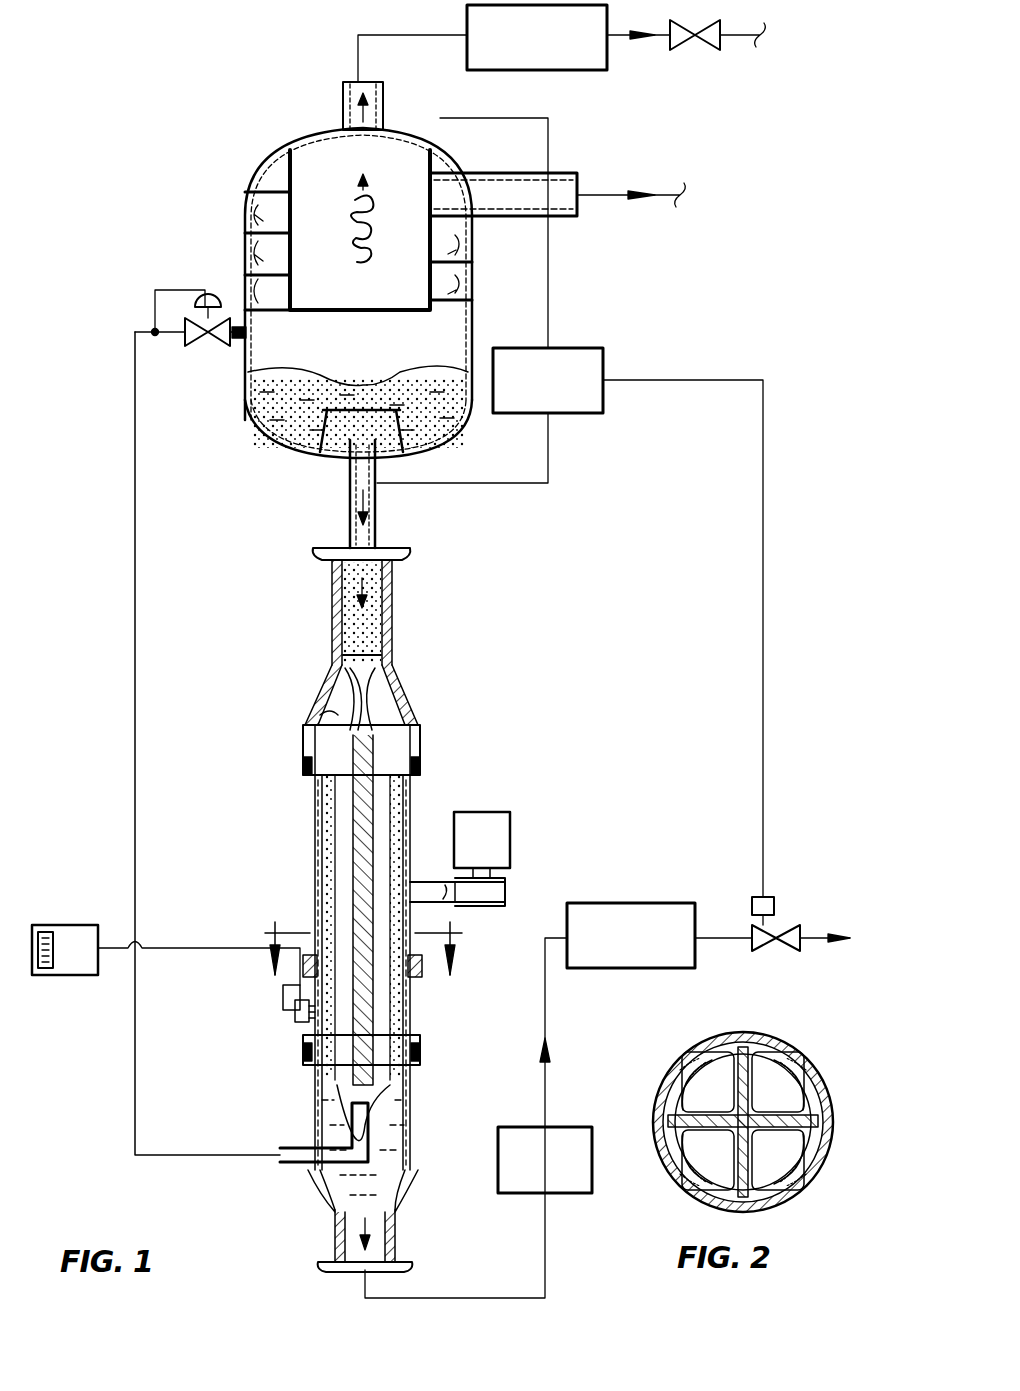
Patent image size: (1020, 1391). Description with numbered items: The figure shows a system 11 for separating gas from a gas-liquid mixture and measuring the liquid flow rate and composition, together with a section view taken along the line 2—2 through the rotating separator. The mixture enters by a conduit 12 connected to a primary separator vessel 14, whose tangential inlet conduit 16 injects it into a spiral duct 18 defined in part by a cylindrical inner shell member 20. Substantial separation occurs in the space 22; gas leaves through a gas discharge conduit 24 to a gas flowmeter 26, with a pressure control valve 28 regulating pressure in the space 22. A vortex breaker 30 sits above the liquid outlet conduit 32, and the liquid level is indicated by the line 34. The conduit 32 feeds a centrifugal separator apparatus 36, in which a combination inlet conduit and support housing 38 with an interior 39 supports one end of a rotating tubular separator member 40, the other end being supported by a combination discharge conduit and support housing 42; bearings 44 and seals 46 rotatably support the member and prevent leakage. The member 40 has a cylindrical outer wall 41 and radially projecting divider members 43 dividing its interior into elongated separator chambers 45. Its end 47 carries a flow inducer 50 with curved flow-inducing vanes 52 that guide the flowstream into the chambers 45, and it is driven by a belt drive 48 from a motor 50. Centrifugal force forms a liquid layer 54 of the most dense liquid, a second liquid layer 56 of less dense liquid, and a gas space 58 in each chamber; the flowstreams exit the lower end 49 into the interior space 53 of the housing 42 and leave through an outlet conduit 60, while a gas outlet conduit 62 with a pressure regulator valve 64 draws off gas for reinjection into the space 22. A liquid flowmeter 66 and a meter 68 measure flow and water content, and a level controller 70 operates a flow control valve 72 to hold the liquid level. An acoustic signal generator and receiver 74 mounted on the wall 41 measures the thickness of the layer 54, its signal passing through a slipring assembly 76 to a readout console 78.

In FIG. 1, the system 11 is at (714, 314).
In FIG. 1, the conduit 12 is at (600, 192).
In FIG. 1, the primary separator vessel 14 is at (325, 133).
In FIG. 1, the tangential inlet conduit 16 is at (483, 168).
In FIG. 1, the spiral duct 18 is at (262, 160).
In FIG. 1, the inner shell member 20 is at (428, 298).
In FIG. 1, the space 22 is at (378, 350).
In FIG. 1, the gas discharge conduit 24 is at (385, 100).
In FIG. 1, the gas flowmeter 26 is at (607, 55).
In FIG. 1, the pressure control valve 28 is at (728, 48).
In FIG. 1, the vortex breaker 30 is at (410, 432).
In FIG. 1, the liquid outlet conduit 32 is at (348, 470).
In FIG. 1, the liquid level line 34 is at (248, 368).
In FIG. 1, the centrifugal separator apparatus 36 is at (299, 802).
In FIG. 1, the combination inlet conduit and support housing 38 is at (402, 682).
In FIG. 1, the interior 39 is at (393, 578).
In FIG. 1, the rotating tubular separator member 40 is at (312, 795).
In FIG. 2, the rotating tubular separator member 40 is at (822, 1165).
In FIG. 2, the cylindrical outer wall 41 is at (805, 1060).
In FIG. 1, the combination discharge conduit and support housing 42 is at (310, 1195).
In FIG. 2, the divider members 43 is at (770, 1052).
In FIG. 1, the bearings 44 is at (420, 770).
In FIG. 2, the separator chambers 45 is at (726, 1100).
In FIG. 1, the seals 46 is at (420, 748).
In FIG. 1, the end 47 is at (318, 718).
In FIG. 1, the belt drive 48 is at (487, 903).
In FIG. 1, the lower end 49 is at (320, 1105).
In FIG. 1, the motor 50 is at (380, 662).
In FIG. 1, the flow-inducing vanes 52 is at (335, 688).
In FIG. 1, the interior space 53 is at (392, 1222).
In FIG. 2, the liquid layer 54 is at (680, 1072).
In FIG. 2, the second liquid layer 56 is at (700, 1058).
In FIG. 2, the gas space 58 is at (722, 1058).
In FIG. 1, the outlet conduit 60 is at (510, 1270).
In FIG. 1, the gas outlet conduit 62 is at (135, 530).
In FIG. 1, the pressure regulator valve 64 is at (185, 342).
In FIG. 1, the liquid flowmeter 66 is at (562, 1193).
In FIG. 1, the meter 68 is at (618, 903).
In FIG. 1, the level controller 70 is at (603, 362).
In FIG. 1, the flow control valve 72 is at (780, 925).
In FIG. 1, the acoustic signal generator and receiver 74 is at (294, 1022).
In FIG. 1, the slipring assembly 76 is at (415, 980).
In FIG. 1, the readout console 78 is at (80, 925).
In FIG. 1, the section line 2 is at (352, 956).